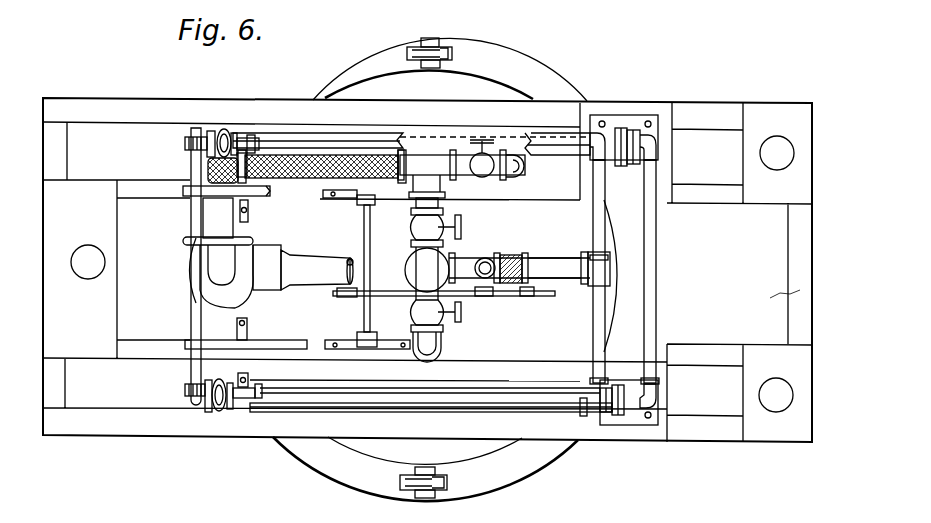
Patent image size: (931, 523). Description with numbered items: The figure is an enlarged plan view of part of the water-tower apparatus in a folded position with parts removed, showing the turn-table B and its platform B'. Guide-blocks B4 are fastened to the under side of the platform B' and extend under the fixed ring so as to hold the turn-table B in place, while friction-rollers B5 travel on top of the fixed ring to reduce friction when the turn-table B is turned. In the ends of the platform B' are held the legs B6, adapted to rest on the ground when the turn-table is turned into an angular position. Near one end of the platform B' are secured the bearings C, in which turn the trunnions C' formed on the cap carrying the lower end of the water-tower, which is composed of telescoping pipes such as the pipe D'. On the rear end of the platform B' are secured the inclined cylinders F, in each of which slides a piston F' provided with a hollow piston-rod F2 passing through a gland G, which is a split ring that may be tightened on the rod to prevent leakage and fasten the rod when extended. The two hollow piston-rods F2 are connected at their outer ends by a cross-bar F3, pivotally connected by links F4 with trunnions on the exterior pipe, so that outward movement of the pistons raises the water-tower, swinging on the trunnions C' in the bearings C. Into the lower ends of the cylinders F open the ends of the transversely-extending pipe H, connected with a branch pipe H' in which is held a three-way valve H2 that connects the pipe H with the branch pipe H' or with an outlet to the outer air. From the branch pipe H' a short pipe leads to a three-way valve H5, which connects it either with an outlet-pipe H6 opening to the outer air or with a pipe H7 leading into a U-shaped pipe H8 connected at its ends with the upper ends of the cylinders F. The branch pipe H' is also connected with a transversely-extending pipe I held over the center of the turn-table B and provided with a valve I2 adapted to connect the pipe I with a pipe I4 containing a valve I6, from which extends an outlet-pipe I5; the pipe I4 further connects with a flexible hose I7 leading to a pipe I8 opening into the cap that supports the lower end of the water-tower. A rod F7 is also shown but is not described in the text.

The turn-table B is at (427, 260).
The platform B' is at (116, 156).
The guide-blocks B4 is at (548, 444).
The friction-rollers B5 is at (450, 50).
The legs B6 is at (92, 253).
The bearings C is at (223, 293).
The trunnions C' is at (201, 278).
The telescoping pipe D' is at (303, 263).
The cylinders F is at (445, 121).
The piston F' is at (415, 410).
The hollow piston-rod F2 is at (218, 132).
The cross-bar F3 is at (200, 372).
The links F4 is at (193, 193).
The thin rod F7 is at (240, 382).
The gland G is at (230, 128).
The transversely-extending pipe H is at (527, 272).
The branch pipe H' is at (437, 298).
The three-way valve H2 is at (593, 322).
The three-way valve H5 is at (508, 260).
The outlet-pipe H6 is at (487, 263).
The pipe H7 is at (540, 262).
The U-shaped pipe H8 is at (317, 143).
The transversely-extending pipe I is at (423, 260).
The valve I2 is at (417, 227).
The pipe I4 is at (423, 170).
The outlet-pipe I5 is at (508, 173).
The valve I6 is at (483, 145).
The flexible hose I7 is at (308, 182).
The pipe I8 is at (220, 223).